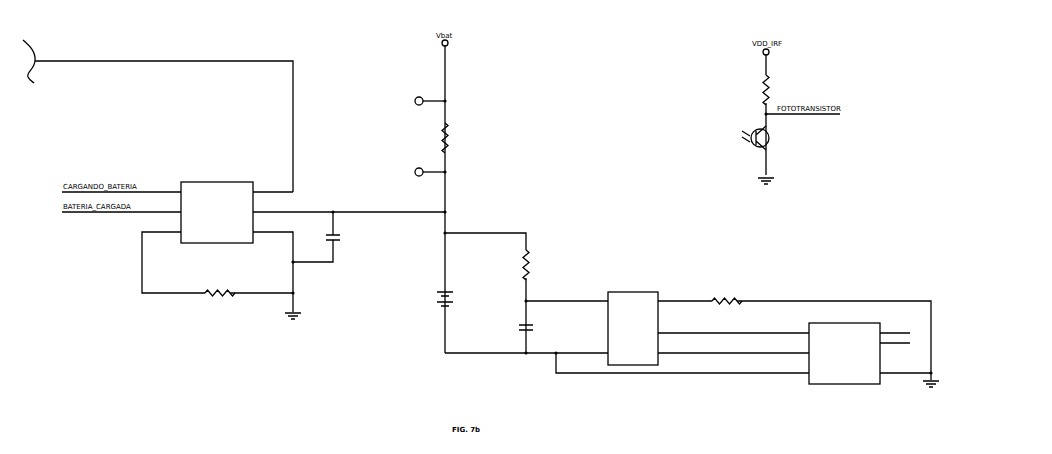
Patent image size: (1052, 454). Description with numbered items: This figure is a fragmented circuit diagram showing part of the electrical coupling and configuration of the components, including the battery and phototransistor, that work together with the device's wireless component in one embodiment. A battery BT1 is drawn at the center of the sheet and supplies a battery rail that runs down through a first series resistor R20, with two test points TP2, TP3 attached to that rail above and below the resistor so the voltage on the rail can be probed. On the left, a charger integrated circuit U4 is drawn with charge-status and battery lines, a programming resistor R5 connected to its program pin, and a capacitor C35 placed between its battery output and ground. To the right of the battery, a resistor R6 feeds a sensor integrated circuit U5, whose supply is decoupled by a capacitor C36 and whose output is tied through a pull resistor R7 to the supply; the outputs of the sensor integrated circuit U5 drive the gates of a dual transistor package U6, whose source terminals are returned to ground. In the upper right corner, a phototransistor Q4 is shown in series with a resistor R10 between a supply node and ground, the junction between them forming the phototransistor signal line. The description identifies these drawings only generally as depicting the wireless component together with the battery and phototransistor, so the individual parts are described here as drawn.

The battery charger IC LGS4054H66 U4 is at (217, 214).
The Hall sensor IC DRV5021 U5 is at (630, 329).
The dual MOSFET FS8205A U6 is at (844, 356).
The resistor 20K R5 is at (215, 290).
The resistor 470 R6 is at (538, 265).
The resistor 2K R7 is at (719, 298).
The resistor 100K R10 is at (780, 90).
The resistor 10 R20 is at (458, 138).
The capacitor 10uF C35 is at (344, 241).
The capacitor 100nF C36 is at (539, 332).
The battery BT1 is at (465, 303).
The test point 2 TP2 is at (422, 101).
The test point 3 TP3 is at (422, 172).
The phototransistor BPW Q4 is at (745, 143).